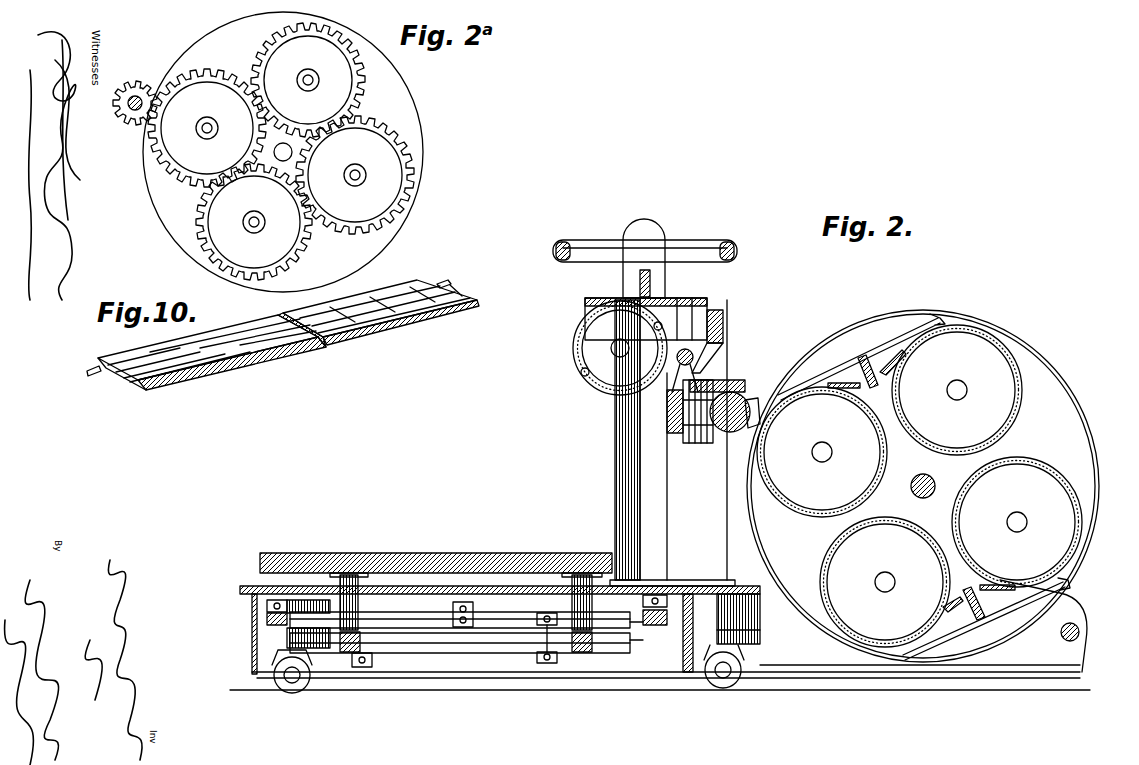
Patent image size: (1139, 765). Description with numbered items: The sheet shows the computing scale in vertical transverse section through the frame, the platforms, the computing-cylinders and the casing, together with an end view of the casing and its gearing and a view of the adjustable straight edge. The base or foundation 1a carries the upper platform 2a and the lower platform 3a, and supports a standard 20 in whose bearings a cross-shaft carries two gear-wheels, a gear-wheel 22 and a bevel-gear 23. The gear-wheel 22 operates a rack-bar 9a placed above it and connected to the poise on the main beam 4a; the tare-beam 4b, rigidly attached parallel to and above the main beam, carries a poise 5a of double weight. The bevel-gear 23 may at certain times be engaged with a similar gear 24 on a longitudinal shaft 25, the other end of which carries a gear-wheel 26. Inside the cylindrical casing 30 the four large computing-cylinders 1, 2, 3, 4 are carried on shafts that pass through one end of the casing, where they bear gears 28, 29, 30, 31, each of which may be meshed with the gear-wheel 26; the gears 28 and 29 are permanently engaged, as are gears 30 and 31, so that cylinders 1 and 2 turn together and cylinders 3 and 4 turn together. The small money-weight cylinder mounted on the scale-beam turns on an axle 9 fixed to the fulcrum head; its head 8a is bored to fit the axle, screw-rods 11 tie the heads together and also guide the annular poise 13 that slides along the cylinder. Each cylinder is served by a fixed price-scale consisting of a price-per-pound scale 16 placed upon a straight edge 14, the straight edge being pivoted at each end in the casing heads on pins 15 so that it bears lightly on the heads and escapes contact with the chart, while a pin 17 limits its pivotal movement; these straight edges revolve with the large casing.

In FIG. 2, the computing-cylinder 1 is at (822, 452).
In FIG. 2, the computing-cylinder 2 is at (957, 390).
In FIG. 2, the computing-cylinder 3 is at (1017, 522).
In FIG. 2, the computing-cylinder 4 is at (885, 582).
In FIG. 2, the base or foundation 1a is at (635, 658).
In FIG. 2, the upper platform 2a is at (582, 247).
In FIG. 2, the lower platform 3a is at (397, 553).
In FIG. 2, the main beam 4a is at (723, 328).
In FIG. 2, the tare-beam 4b is at (640, 285).
In FIG. 2, the poise 5a is at (644, 258).
In FIG. 2, the head 8a is at (620, 348).
In FIG. 2, the axle 9 is at (630, 348).
In FIG. 2, the rack-bar 9a is at (668, 393).
In FIG. 2, the screw-rods 11 is at (660, 323).
In FIG. 2, the annular poise 13 is at (573, 337).
In FIG. 10, the straight edge 14 is at (283, 355).
In FIG. 2, the straight edge 14 is at (895, 368).
In FIG. 10, the pins 15 is at (88, 378).
In FIG. 2, the pins 15 is at (893, 380).
In FIG. 10, the price-per-pound scale 16 is at (380, 328).
In FIG. 2, the pin 17 is at (895, 352).
In FIG. 2, the standard 20 is at (672, 443).
In FIG. 2, the gear-wheel 22 is at (688, 442).
In FIG. 2, the bevel-gear 23 is at (707, 446).
In FIG. 2, the bevel-gear 24 is at (748, 400).
In FIG. 2A, the longitudinal shaft 25 is at (130, 112).
In FIG. 2, the longitudinal shaft 25 is at (760, 414).
In FIG. 2A, the gear-wheel 26 is at (135, 80).
In FIG. 2A, the gear 28 is at (207, 119).
In FIG. 2A, the gear 29 is at (320, 80).
In FIG. 2A, the gear 30 is at (297, 152).
In FIG. 2, the gear 30 is at (1090, 436).
In FIG. 2A, the gear 31 is at (240, 222).